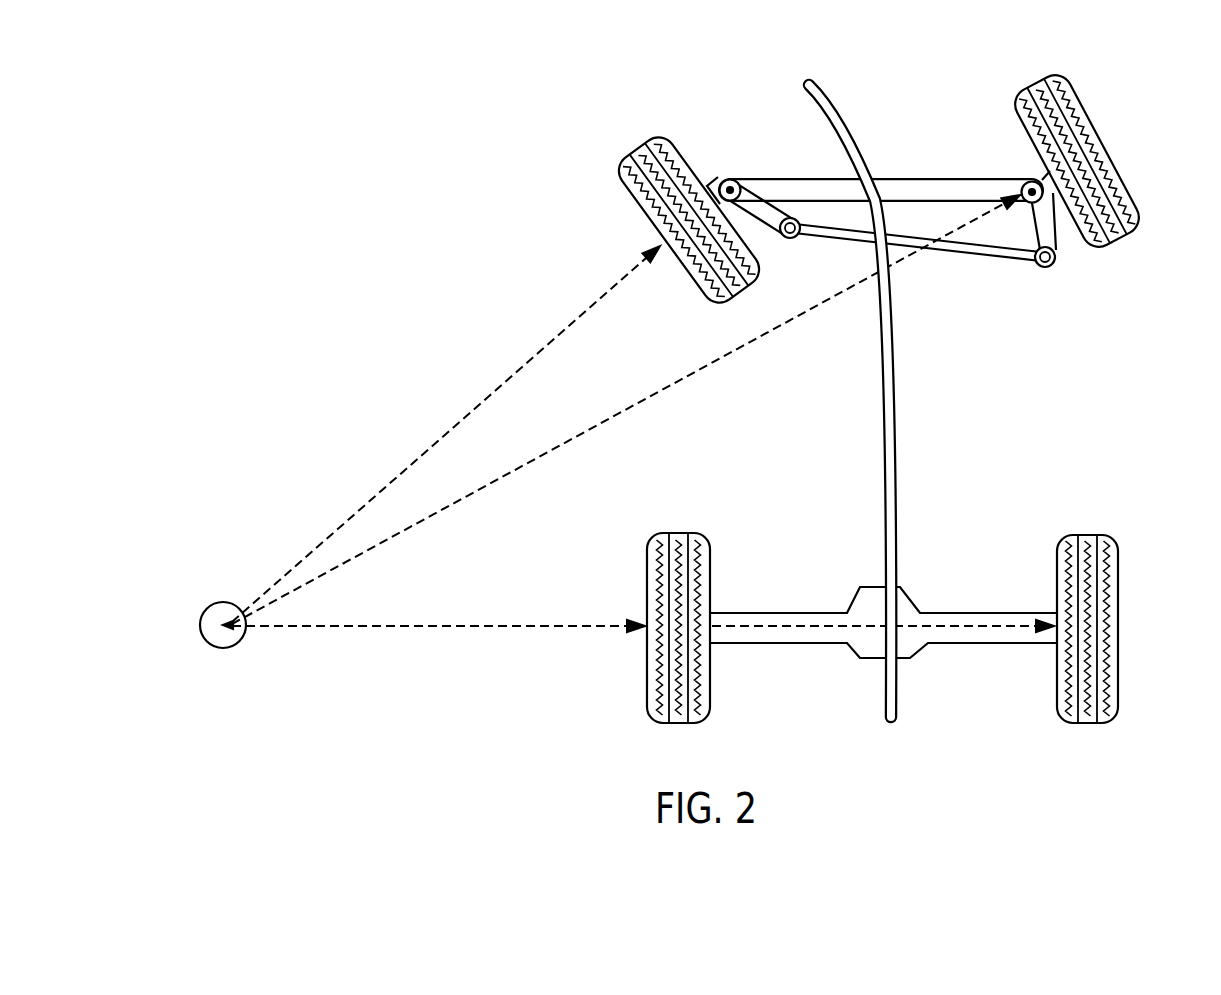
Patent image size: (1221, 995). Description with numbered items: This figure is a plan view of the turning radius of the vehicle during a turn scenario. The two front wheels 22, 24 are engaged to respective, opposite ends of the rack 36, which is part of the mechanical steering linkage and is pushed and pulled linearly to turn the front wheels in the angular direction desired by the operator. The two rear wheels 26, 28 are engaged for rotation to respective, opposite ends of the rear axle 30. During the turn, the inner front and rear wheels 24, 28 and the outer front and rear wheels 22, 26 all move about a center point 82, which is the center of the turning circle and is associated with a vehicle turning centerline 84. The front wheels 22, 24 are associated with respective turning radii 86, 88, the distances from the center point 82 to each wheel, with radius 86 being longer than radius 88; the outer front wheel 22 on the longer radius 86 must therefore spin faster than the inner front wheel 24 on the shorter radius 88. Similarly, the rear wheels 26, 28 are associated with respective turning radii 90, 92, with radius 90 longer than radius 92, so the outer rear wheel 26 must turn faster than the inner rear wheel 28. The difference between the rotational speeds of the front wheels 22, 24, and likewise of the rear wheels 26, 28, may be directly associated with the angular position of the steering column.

The outer front wheel 22 is at (1100, 134).
The inner front wheel 24 is at (630, 192).
The outer rear wheel 26 is at (1120, 628).
The inner rear wheel 28 is at (648, 698).
The rear axle 30 is at (968, 646).
The rack 36 is at (973, 266).
The center point 82 is at (229, 649).
The vehicle turning centerline 84 is at (840, 137).
The turning radius 86 is at (502, 478).
The turning radius 88 is at (456, 422).
The turning radius 90 is at (952, 622).
The turning radius 92 is at (444, 630).